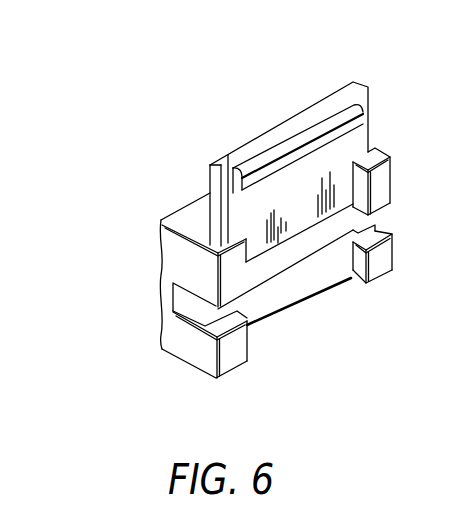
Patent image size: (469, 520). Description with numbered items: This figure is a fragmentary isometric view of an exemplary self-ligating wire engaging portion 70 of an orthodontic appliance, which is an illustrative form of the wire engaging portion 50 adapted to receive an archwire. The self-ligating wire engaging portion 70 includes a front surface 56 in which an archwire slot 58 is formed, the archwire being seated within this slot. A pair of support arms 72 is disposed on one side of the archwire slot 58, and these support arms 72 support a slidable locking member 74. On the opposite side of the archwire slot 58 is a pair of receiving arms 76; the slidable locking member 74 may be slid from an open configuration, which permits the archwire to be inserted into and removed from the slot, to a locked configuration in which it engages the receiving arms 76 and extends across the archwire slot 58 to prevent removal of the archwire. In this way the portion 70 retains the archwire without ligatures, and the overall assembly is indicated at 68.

The wire engaging portion 50 is at (140, 198).
The front surface 56 is at (298, 303).
The archwire slot 58 is at (301, 257).
The mounting assembly 68 is at (400, 80).
The self-ligating wire engaging portion 70 is at (176, 154).
The support arms 72 is at (240, 278).
The slidable locking member 74 is at (358, 135).
The receiving arms 76 is at (233, 357).